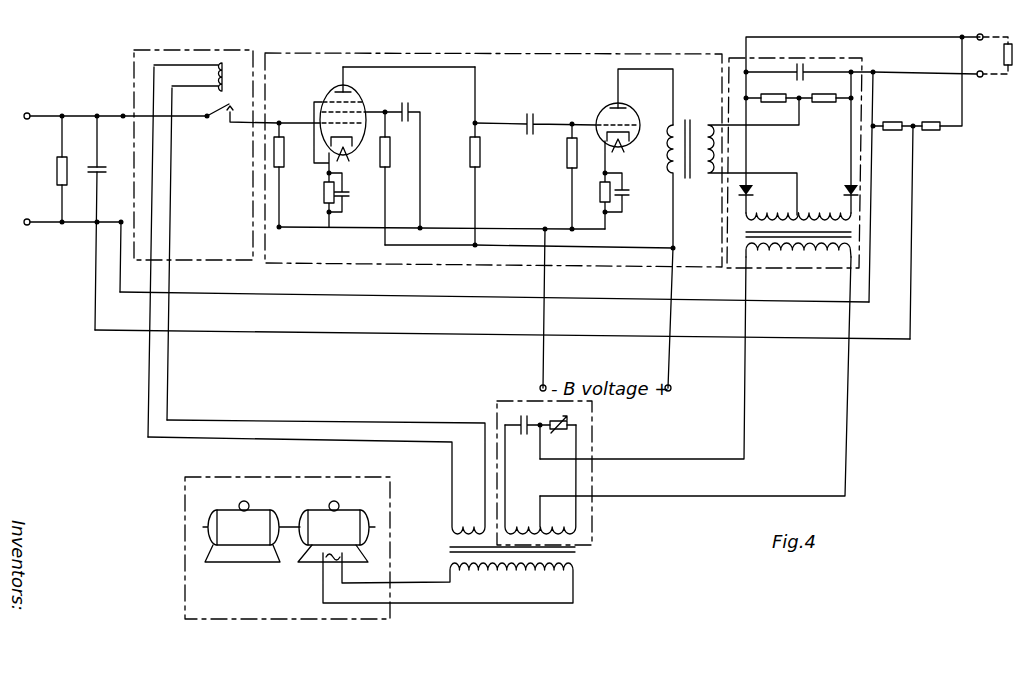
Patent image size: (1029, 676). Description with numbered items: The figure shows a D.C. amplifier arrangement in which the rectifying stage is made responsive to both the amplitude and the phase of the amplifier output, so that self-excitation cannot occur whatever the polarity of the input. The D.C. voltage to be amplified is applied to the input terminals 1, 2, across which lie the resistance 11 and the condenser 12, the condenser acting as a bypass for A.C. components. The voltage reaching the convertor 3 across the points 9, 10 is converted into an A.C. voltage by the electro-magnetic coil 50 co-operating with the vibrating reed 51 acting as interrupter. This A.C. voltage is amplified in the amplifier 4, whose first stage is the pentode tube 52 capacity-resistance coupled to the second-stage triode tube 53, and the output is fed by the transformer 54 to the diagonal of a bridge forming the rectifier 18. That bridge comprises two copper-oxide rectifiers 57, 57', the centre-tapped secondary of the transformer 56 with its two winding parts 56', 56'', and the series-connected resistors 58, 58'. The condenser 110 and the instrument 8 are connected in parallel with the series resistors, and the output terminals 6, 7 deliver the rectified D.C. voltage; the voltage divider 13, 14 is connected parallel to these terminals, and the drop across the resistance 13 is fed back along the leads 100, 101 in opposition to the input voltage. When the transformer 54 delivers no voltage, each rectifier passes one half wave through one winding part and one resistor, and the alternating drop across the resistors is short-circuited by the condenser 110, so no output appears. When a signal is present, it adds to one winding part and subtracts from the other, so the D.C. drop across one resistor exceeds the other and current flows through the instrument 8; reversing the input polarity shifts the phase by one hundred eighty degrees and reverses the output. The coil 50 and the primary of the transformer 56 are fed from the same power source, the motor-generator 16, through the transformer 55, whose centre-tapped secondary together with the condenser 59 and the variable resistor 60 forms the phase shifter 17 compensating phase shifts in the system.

The input terminal 1 is at (72, 105).
The input terminal 2 is at (71, 234).
The convertor 3 is at (203, 50).
The amplifier 4 is at (489, 54).
The output terminal 6 is at (977, 26).
The output terminal 7 is at (976, 85).
The measuring instrument 8 is at (997, 55).
The convertor input terminal 9 is at (160, 104).
The convertor input terminal 10 is at (113, 244).
The resistance 11 is at (51, 169).
The condenser 12 is at (107, 222).
The voltage divider resistance 13 is at (893, 115).
The voltage divider resistance 14 is at (937, 83).
The motor-generator 16 is at (287, 549).
The phase shifter 17 is at (592, 445).
The rectifier 18 is at (797, 58).
The electro-magnetic coil 50 is at (223, 63).
The vibrating reed 51 is at (242, 123).
The pentode tube 52 is at (331, 102).
The triode tube 53 is at (611, 107).
The transformer 54 is at (733, 173).
The transformer 55 is at (577, 552).
The transformer 56 is at (824, 243).
The secondary winding part 56' is at (772, 208).
The secondary winding part 56'' is at (825, 208).
The copper-oxide rectifier 57 is at (758, 198).
The copper-oxide rectifier 57' is at (839, 194).
The resistor 58 is at (773, 109).
The resistor 58' is at (826, 109).
The condenser 59 is at (522, 438).
The variable resistor 60 is at (557, 438).
The feedback lead 100 is at (496, 187).
The feedback lead 101 is at (504, 232).
The condenser 110 is at (805, 70).